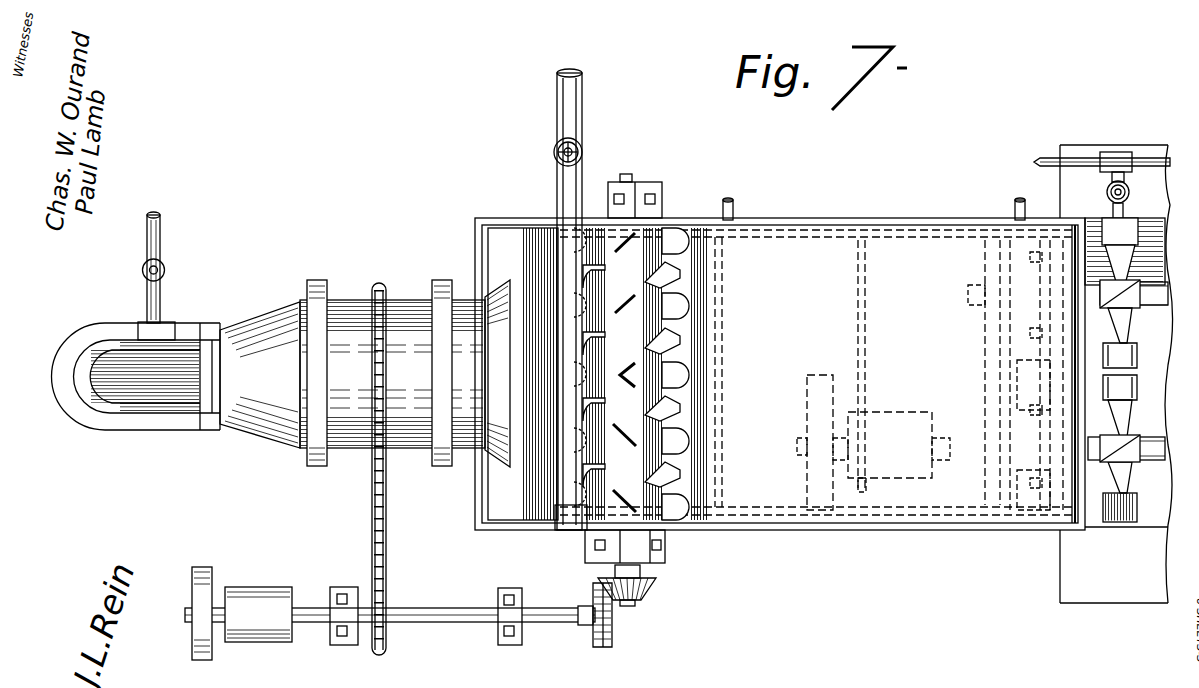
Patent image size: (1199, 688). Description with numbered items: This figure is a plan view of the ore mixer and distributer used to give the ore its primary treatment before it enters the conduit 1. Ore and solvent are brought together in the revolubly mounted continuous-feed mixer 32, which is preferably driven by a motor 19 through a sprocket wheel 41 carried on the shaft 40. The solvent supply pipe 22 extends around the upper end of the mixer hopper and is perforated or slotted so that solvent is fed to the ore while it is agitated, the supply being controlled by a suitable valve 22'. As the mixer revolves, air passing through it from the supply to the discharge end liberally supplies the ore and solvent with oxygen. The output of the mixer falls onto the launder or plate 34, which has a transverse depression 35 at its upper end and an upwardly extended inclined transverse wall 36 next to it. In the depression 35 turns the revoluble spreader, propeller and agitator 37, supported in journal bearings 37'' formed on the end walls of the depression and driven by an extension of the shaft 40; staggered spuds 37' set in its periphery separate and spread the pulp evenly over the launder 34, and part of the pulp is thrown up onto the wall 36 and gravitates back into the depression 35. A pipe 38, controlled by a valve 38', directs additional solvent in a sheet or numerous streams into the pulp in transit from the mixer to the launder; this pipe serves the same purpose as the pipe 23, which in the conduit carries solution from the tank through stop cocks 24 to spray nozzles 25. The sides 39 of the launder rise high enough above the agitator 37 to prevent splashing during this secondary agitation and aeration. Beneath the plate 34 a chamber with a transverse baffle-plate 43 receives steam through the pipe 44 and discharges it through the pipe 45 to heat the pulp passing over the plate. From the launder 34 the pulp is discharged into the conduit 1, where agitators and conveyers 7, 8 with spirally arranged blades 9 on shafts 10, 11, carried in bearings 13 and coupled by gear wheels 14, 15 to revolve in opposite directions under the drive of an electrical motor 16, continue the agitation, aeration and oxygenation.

The conduit 1 is at (1148, 500).
The agitator and conveyer 7 is at (1135, 440).
The agitator and conveyer 8 is at (1132, 290).
The spirally arranged vanes or blades 9 is at (1108, 536).
The shaft 10 is at (1136, 470).
The shaft 11 is at (1136, 318).
The bearings 13 is at (1025, 290).
The gear wheel 14 is at (990, 488).
The gear wheel 15 is at (985, 270).
The electrical motor 16 is at (866, 412).
The motor 19 is at (258, 600).
The pipe 22 is at (136, 334).
The valve 22' is at (180, 264).
The pipe 23 is at (1040, 160).
The stop cock 24 is at (1107, 192).
The spray nozzle 25 is at (1125, 196).
The continuous-feed mixer 32 is at (268, 302).
The launder or plate 34 is at (911, 343).
The transverse depression 35 is at (700, 300).
The inclined transverse wall 36 is at (492, 240).
The spreader, propeller and agitator 37 is at (677, 372).
The spuds 37' is at (701, 376).
The journal bearings 37'' is at (657, 368).
The pipe 38 is at (589, 299).
The valve 38' is at (593, 151).
The sides 39 is at (850, 222).
The shaft 40 is at (458, 610).
The sprocket wheel 41 is at (388, 510).
The transverse baffle-plate 43 is at (866, 326).
The steam supply pipe 44 is at (1025, 212).
The discharge pipe 45 is at (735, 222).